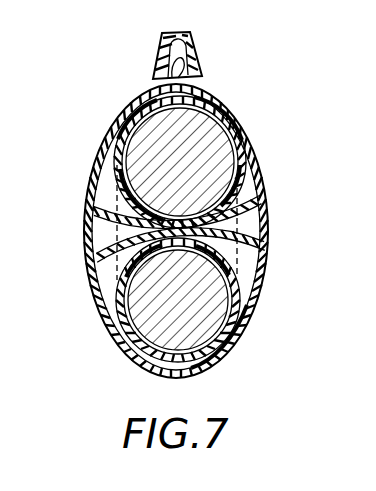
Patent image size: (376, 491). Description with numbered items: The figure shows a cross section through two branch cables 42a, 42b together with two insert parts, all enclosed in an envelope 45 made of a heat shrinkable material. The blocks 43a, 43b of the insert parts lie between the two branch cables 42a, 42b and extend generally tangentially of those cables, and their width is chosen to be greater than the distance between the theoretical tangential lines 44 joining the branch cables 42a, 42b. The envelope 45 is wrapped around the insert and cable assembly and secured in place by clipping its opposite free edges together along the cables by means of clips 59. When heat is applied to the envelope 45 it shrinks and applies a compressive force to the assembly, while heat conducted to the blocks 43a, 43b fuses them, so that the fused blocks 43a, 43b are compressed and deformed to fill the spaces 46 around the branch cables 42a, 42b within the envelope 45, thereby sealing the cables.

The clips 59 is at (196, 38).
The branch cable 42a is at (244, 132).
The branch cable 42b is at (237, 339).
The block 43a is at (245, 212).
The block 43b is at (243, 265).
The theoretical tangential lines 44 is at (262, 189).
The envelope 45 is at (92, 174).
The spaces 46 is at (238, 187).